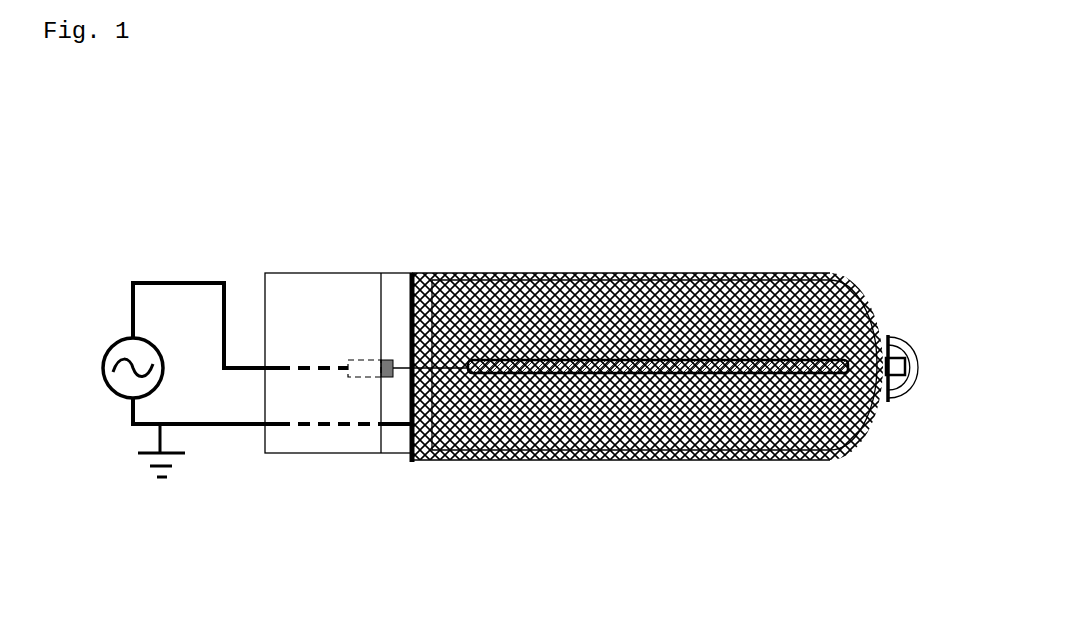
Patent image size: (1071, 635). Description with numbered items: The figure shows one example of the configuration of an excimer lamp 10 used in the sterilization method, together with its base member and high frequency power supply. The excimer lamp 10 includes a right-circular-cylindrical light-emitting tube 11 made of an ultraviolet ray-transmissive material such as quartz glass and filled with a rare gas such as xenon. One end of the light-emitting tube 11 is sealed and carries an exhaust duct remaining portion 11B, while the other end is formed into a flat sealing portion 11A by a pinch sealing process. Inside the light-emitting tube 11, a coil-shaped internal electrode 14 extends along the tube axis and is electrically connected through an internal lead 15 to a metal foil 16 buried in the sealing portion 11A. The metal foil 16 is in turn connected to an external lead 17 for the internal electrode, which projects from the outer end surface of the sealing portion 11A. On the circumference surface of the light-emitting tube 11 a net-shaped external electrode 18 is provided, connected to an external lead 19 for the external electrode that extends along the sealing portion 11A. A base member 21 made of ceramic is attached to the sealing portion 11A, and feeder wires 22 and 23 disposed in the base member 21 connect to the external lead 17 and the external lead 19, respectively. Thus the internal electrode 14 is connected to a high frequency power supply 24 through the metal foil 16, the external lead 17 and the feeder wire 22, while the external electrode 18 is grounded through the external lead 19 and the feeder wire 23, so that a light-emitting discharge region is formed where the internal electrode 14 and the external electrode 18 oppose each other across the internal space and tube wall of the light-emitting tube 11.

The excimer lamp 10 is at (793, 254).
The light-emitting tube 11 is at (585, 273).
The sealing portion 11A is at (399, 272).
The exhaust duct remaining portion 11B is at (908, 345).
The internal electrode 14 is at (675, 358).
The internal lead 15 is at (399, 380).
The metal foil 16 is at (397, 358).
The external lead for an internal electrode 17 is at (305, 362).
The external electrode 18 is at (565, 462).
The external lead for an external electrode 19 is at (390, 426).
The base member 21 is at (297, 455).
The feeder wire 22 is at (175, 281).
The feeder wire 23 is at (205, 427).
The high frequency power supply 24 is at (113, 348).